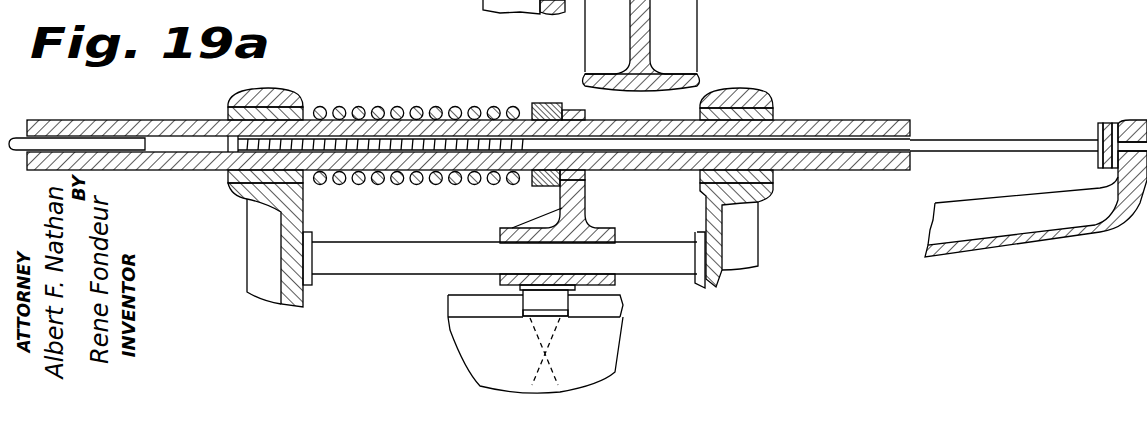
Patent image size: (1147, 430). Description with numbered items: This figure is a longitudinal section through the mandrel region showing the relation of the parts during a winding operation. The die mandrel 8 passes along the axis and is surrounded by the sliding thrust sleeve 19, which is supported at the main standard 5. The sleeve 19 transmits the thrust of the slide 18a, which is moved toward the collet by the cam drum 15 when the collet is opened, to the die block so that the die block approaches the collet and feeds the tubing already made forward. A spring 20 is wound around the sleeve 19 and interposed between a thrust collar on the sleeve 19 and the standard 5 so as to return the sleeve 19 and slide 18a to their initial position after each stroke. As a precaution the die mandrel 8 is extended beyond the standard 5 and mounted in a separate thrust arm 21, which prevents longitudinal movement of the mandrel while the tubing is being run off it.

The main standard 5 is at (252, 221).
The die mandrel 8 is at (110, 140).
The cam drum 15 is at (615, 356).
The slide 18a is at (612, 232).
The sliding thrust sleeve 19 is at (190, 121).
The spring 20 is at (437, 100).
The thrust arm 21 is at (1027, 243).